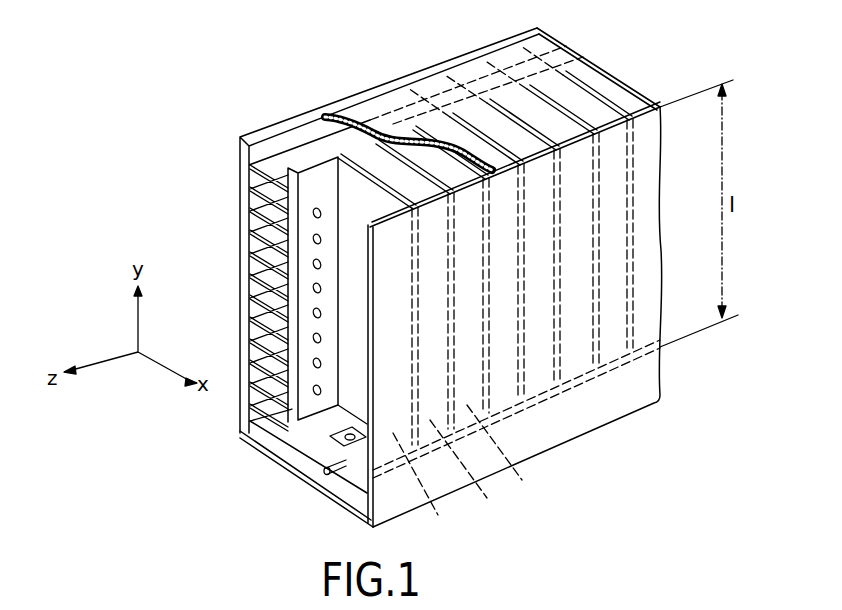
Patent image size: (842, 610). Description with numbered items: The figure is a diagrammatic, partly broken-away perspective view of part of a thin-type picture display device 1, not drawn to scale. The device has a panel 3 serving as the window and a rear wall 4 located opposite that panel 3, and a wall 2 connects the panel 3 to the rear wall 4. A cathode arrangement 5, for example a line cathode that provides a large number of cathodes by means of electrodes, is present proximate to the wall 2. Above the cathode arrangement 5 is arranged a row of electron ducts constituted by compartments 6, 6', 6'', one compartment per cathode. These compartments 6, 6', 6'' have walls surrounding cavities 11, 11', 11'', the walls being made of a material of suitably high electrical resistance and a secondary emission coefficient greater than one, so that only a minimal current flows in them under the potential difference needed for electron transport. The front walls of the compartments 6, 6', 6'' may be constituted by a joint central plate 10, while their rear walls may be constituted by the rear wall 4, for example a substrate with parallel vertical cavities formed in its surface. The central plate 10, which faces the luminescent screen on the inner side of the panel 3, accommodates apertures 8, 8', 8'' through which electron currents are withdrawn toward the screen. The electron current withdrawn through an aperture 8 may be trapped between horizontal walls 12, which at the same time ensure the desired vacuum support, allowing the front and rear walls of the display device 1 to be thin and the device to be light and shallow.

The picture display device 1 is at (672, 370).
The wall 2 is at (278, 461).
The panel 3 is at (297, 132).
The rear wall 4 is at (620, 405).
The cathode arrangement 5 is at (335, 474).
The compartment 6 is at (419, 485).
The compartment 6' is at (464, 472).
The compartment 6'' is at (503, 453).
The aperture 8 is at (270, 282).
The aperture 8' is at (263, 245).
The aperture 8'' is at (263, 276).
The central plate 10 is at (575, 62).
The cavity 11 is at (307, 300).
The cavity 11' is at (393, 131).
The cavity 11'' is at (408, 112).
The horizontal walls 12 is at (248, 232).